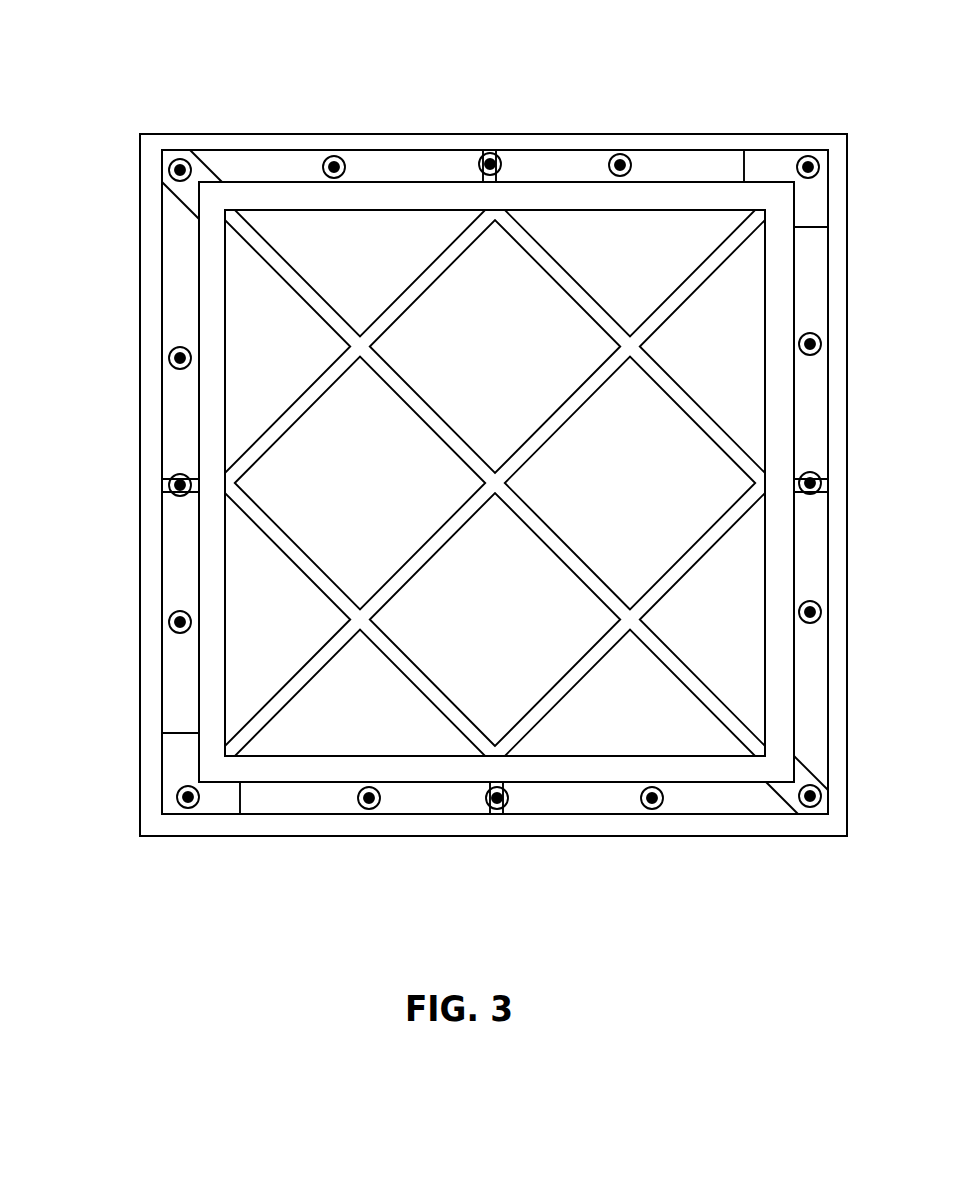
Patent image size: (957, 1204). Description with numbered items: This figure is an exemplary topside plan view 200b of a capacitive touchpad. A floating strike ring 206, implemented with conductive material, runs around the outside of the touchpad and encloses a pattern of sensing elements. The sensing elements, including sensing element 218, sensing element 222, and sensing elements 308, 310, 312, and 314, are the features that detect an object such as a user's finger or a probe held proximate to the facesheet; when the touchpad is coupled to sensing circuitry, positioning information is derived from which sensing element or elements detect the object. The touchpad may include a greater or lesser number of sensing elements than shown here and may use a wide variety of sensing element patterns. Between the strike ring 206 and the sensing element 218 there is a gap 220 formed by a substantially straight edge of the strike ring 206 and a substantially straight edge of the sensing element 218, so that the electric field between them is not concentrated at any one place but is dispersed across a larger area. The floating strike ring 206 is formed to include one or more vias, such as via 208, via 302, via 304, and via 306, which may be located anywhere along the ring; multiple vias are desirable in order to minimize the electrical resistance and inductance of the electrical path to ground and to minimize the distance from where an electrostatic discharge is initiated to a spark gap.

The topside plan view 200b is at (783, 74).
The floating strike ring 206 is at (162, 288).
The gap 220 is at (222, 132).
The via 208 is at (157, 358).
The via 306 is at (335, 155).
The via 302 is at (174, 614).
The via 304 is at (182, 808).
The sensing element 218 is at (296, 358).
The sensing element 222 is at (516, 366).
The sensing element 308 is at (301, 622).
The sensing element 310 is at (386, 494).
The sensing element 312 is at (377, 270).
The sensing element 314 is at (641, 270).